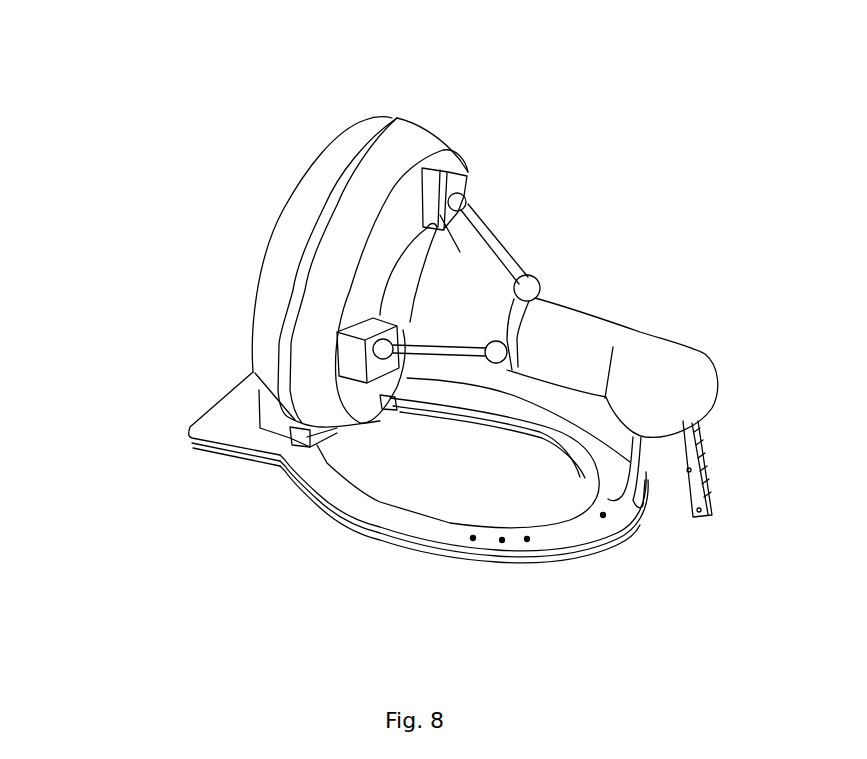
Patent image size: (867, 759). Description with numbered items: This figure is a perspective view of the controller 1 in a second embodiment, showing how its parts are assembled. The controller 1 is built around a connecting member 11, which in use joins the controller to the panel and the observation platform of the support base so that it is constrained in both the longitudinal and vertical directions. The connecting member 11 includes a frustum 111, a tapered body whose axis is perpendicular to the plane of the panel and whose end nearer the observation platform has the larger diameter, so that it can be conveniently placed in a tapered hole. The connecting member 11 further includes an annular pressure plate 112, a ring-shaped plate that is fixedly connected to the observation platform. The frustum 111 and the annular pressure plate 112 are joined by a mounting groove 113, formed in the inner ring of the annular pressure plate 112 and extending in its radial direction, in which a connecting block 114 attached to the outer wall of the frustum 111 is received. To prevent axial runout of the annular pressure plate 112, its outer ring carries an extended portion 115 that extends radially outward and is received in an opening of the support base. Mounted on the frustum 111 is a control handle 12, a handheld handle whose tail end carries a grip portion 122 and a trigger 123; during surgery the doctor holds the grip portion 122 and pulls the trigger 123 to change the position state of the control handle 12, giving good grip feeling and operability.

The controller 1 is at (270, 125).
The connecting member 11 is at (97, 595).
The frustum 111 is at (312, 203).
The annular pressure plate 112 is at (355, 510).
The mounting groove 113 is at (390, 417).
The connecting block 114 is at (292, 430).
The extended portion 115 is at (240, 433).
The control handle 12 is at (572, 342).
The grip portion 122 is at (700, 517).
The trigger 123 is at (641, 523).